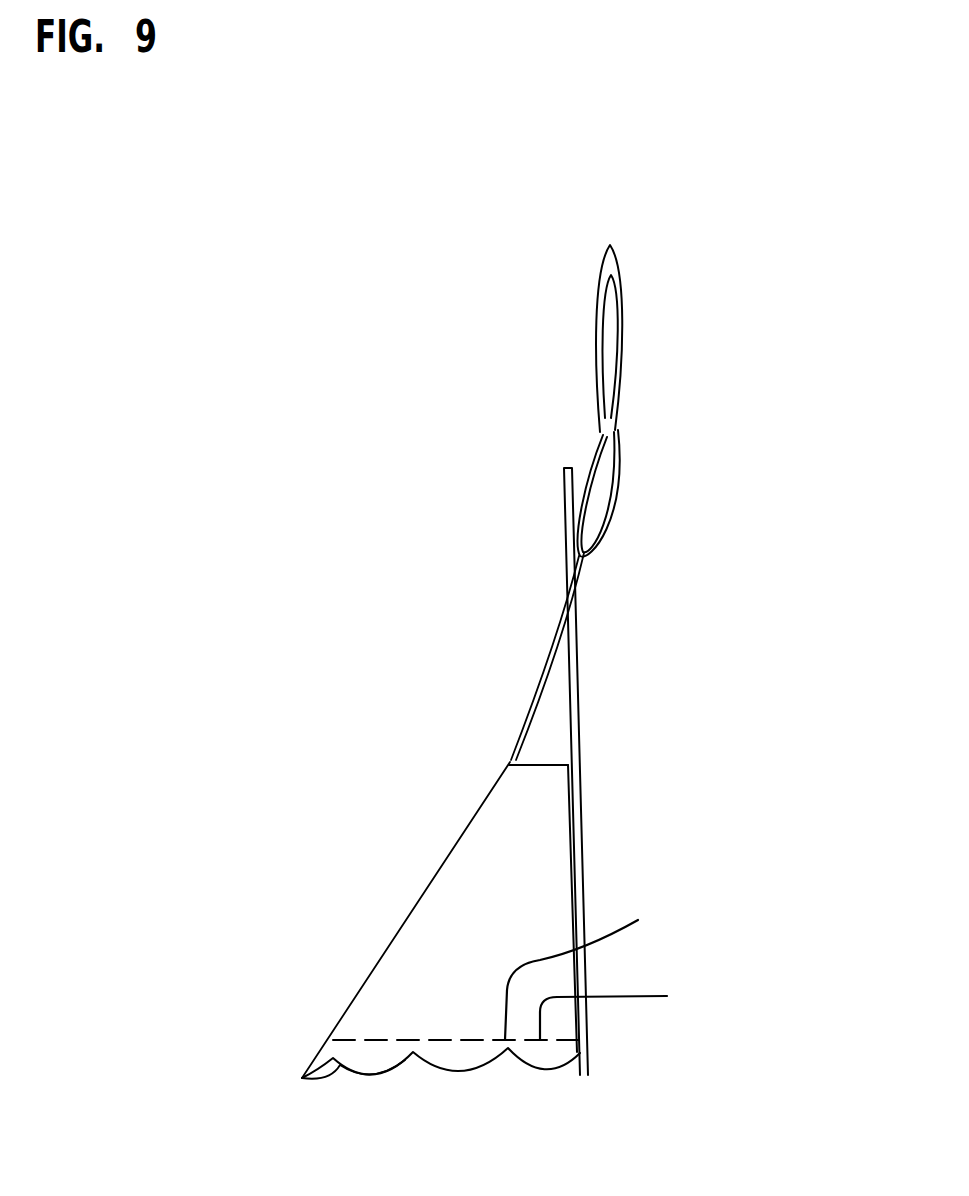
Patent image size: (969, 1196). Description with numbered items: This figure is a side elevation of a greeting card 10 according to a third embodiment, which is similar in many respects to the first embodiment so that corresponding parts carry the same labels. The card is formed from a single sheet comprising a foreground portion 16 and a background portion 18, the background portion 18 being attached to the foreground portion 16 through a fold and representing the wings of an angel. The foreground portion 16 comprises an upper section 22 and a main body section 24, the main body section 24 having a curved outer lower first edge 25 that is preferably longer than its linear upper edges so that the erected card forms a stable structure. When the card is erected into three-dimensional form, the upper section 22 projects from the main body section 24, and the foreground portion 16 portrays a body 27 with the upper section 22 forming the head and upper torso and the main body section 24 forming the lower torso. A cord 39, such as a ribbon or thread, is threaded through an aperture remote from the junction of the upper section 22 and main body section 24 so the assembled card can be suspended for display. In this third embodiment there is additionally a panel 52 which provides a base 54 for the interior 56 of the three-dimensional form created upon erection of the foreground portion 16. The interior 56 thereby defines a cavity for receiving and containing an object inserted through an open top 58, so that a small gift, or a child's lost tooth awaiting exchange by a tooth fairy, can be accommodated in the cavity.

The greeting card 10 is at (471, 708).
The foreground portion 16 is at (429, 968).
The background portion 18 is at (580, 732).
The upper section 22 is at (540, 687).
The main body section 24 is at (462, 878).
The curved outer lower first edge 25 is at (338, 1064).
The body 27 is at (378, 1000).
The cord 39 is at (610, 425).
The panel 52 is at (627, 1011).
The base 54 is at (581, 967).
The interior 56 is at (548, 866).
The open top 58 is at (545, 762).